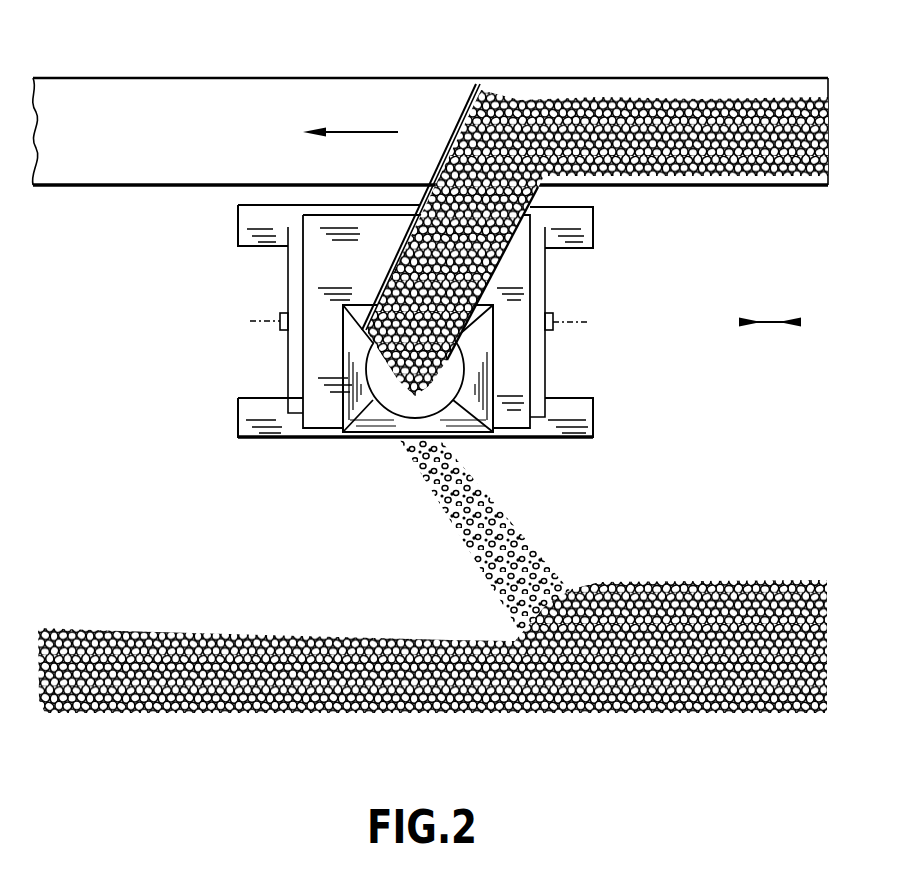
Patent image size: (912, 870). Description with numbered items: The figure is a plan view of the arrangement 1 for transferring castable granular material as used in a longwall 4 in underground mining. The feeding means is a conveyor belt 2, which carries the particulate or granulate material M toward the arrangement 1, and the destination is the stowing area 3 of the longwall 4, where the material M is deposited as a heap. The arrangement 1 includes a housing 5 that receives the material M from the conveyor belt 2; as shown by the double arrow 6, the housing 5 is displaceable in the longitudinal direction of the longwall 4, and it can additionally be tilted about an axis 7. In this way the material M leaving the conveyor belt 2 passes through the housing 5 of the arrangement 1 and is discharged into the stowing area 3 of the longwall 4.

The arrangement for transferring castable granular material 1 is at (228, 413).
The conveyor belt 2 is at (150, 97).
The stowing area 3 is at (822, 600).
The longwall 4 is at (750, 416).
The housing 5 is at (318, 268).
The double arrow 6 is at (772, 322).
The axis 7 is at (578, 321).
The material M is at (755, 100).